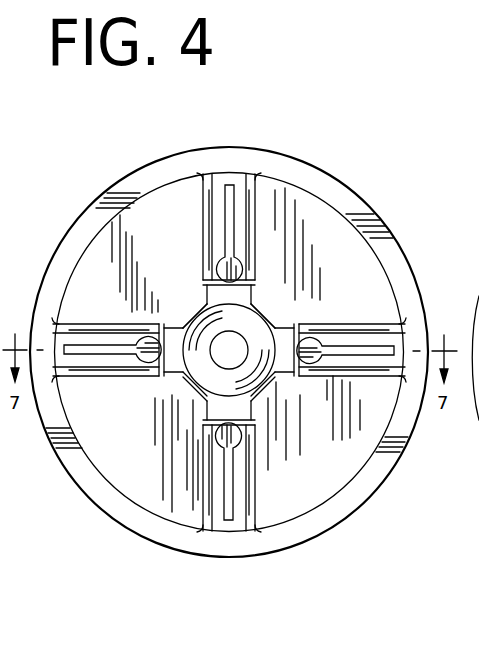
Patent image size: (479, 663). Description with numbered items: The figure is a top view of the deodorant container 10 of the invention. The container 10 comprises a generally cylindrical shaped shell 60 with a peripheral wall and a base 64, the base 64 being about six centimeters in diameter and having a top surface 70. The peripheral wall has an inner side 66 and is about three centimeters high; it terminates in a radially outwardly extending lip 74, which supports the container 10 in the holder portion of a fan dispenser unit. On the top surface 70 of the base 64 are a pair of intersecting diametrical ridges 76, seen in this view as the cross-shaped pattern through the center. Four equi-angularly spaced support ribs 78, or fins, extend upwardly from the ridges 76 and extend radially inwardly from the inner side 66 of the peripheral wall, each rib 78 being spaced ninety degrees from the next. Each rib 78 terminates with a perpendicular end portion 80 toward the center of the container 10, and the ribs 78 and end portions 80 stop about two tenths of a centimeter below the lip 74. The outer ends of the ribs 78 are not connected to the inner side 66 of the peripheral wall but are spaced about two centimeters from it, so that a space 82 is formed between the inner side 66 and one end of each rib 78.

The container 10 is at (314, 112).
The shell 60 is at (66, 236).
The base 64 is at (108, 255).
The inner side 66 is at (149, 508).
The top surface 70 is at (357, 273).
The lip 74 is at (330, 190).
The diametrical ridges 76 is at (113, 364).
The support ribs 78 is at (228, 505).
The end portion 80 is at (298, 382).
The space 82 is at (397, 362).